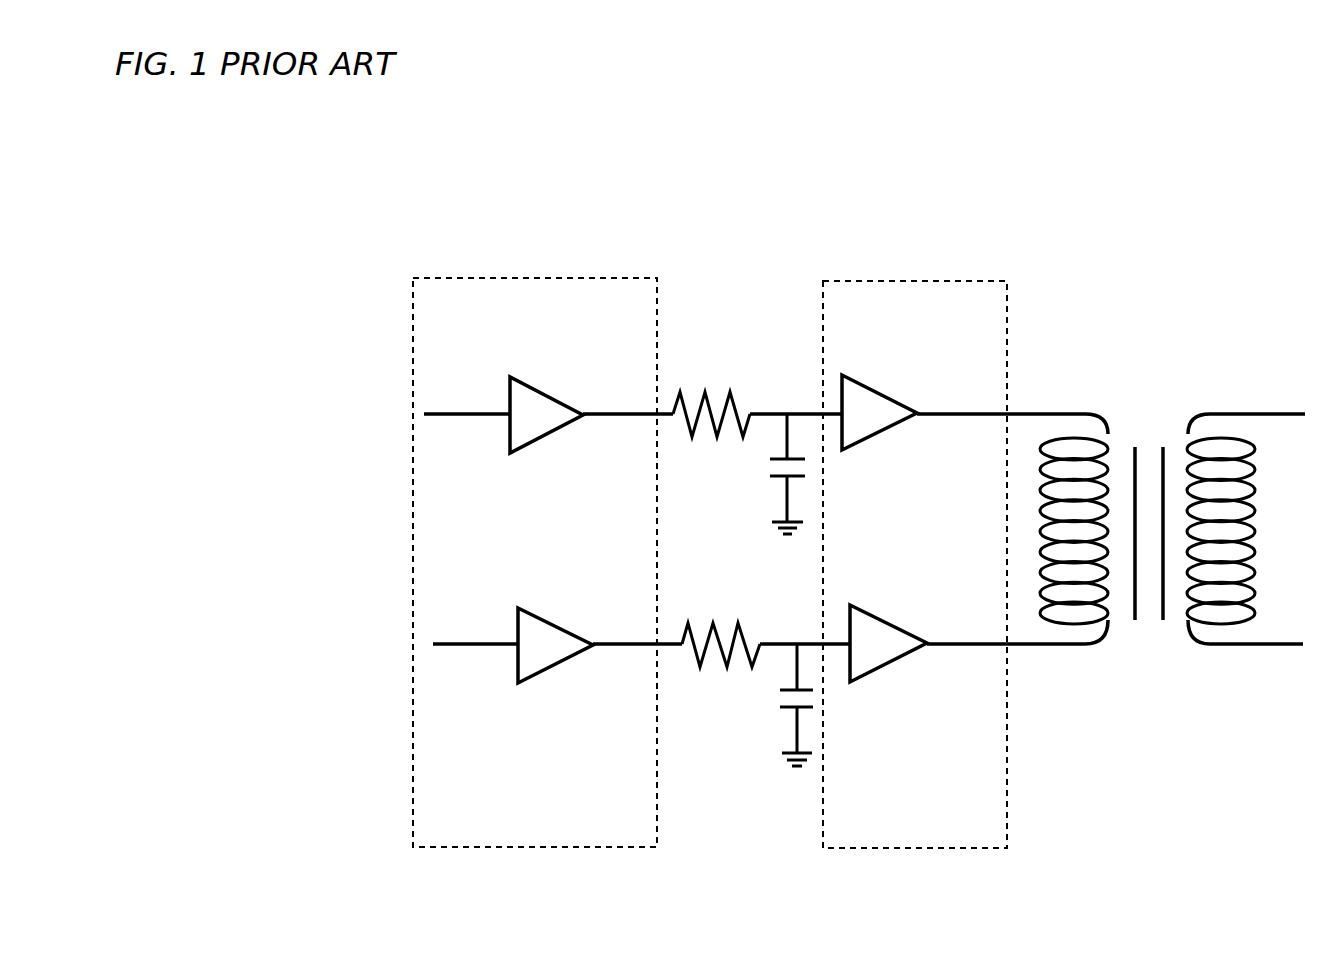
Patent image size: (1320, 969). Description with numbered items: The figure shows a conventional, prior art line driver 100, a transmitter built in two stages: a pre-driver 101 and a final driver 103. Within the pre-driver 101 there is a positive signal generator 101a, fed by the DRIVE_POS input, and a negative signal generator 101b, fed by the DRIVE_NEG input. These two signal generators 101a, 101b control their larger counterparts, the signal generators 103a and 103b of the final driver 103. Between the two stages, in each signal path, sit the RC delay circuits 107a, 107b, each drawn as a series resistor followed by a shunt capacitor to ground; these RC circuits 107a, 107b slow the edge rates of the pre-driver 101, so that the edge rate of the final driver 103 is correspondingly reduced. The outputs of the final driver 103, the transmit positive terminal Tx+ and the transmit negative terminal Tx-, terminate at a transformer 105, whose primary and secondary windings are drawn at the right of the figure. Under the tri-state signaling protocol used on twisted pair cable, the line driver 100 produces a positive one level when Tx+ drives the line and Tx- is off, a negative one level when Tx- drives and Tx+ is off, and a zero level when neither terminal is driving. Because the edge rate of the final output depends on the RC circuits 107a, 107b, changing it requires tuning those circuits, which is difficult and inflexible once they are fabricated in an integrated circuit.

The line driver 100 is at (808, 203).
The pre-driver 101 is at (530, 278).
The positive signal generator 101a is at (554, 443).
The negative signal generator 101b is at (575, 668).
The final driver 103 is at (913, 281).
The signal generator 103a is at (898, 437).
The signal generator 103b is at (917, 660).
The transformer 105 is at (1155, 393).
The RC delay circuit 107a is at (767, 382).
The RC delay circuit 107b is at (727, 708).